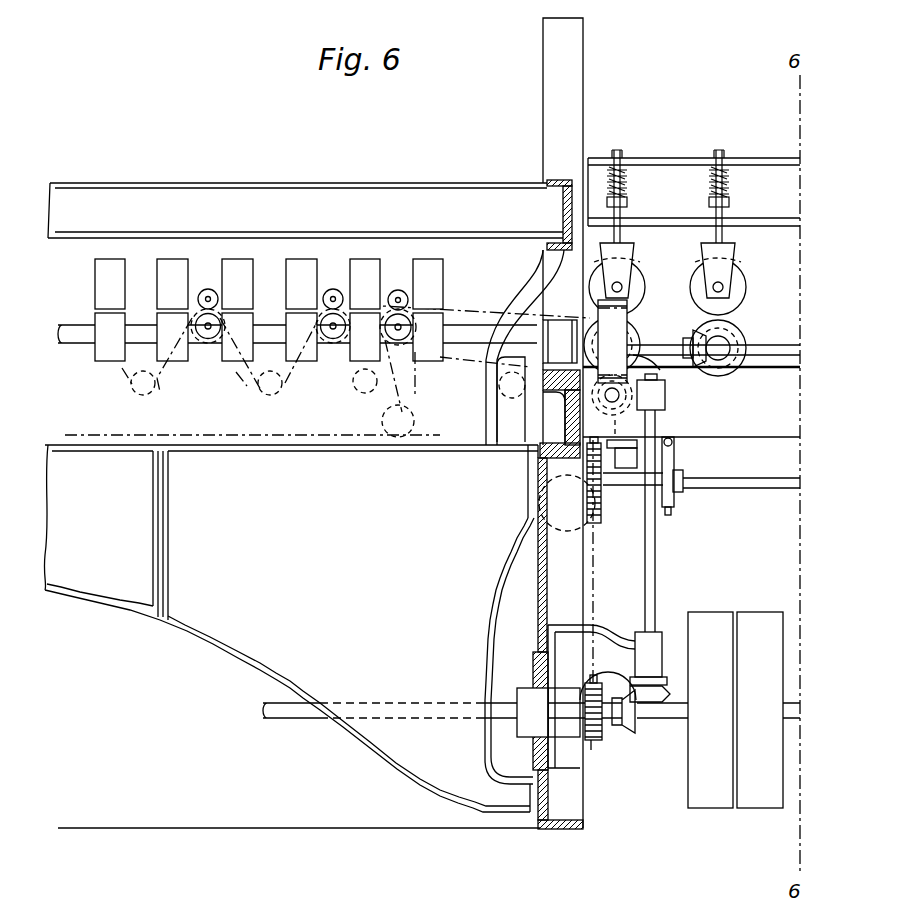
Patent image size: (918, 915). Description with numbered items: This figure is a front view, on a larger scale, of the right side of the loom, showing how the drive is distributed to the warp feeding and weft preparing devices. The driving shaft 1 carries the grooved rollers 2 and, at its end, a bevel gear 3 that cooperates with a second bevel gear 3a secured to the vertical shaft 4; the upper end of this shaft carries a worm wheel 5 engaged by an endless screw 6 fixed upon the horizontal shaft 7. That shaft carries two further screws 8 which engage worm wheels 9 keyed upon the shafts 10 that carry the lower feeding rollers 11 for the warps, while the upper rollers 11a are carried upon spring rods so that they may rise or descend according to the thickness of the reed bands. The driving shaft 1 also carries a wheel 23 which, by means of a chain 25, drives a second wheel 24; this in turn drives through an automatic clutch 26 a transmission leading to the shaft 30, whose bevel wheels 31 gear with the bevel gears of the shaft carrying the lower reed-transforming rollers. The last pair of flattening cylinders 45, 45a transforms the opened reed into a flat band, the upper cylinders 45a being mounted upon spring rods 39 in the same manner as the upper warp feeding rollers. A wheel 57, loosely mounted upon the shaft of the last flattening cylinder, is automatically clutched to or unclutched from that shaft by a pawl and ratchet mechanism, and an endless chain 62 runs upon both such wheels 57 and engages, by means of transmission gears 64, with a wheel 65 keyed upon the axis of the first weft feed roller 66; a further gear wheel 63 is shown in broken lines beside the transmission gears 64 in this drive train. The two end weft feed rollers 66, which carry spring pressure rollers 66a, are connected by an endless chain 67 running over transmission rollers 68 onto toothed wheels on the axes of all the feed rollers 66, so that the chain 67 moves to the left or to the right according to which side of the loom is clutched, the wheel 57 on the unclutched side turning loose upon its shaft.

The driving shaft 1 is at (292, 715).
The grooved rollers 2 is at (735, 710).
The bevel gear 3 is at (630, 734).
The second bevel gear 3a is at (668, 692).
The shaft 4 is at (655, 563).
The worm wheel 5 is at (651, 392).
The endless screw 6 is at (627, 413).
The shaft 7 is at (604, 400).
The screws 8 is at (600, 408).
The worm wheels 9 is at (612, 341).
The shafts 10 is at (80, 346).
The lower feeding rollers 11 is at (110, 362).
The upper rollers 11a is at (97, 282).
The wheel 23 is at (593, 744).
The second wheel 24 is at (598, 528).
The chain 25 is at (595, 592).
The automatic clutch 26 is at (674, 462).
The shaft 30 is at (788, 351).
The bevel wheels 31 is at (702, 358).
The spring rod 39 is at (720, 176).
The flattening cylinders 45 is at (640, 334).
The upper flattening cylinders 45a is at (699, 262).
The wheel 57 is at (633, 355).
The endless chain 62 is at (465, 361).
The gear wheel 63 is at (561, 531).
The transmission gears 64 is at (510, 398).
The wheel 65 is at (395, 350).
The weft feed rollers 66 is at (325, 346).
The spring pressure rollers 66a is at (208, 289).
The endless chain 67 is at (166, 374).
The transmission rollers 68 is at (262, 386).